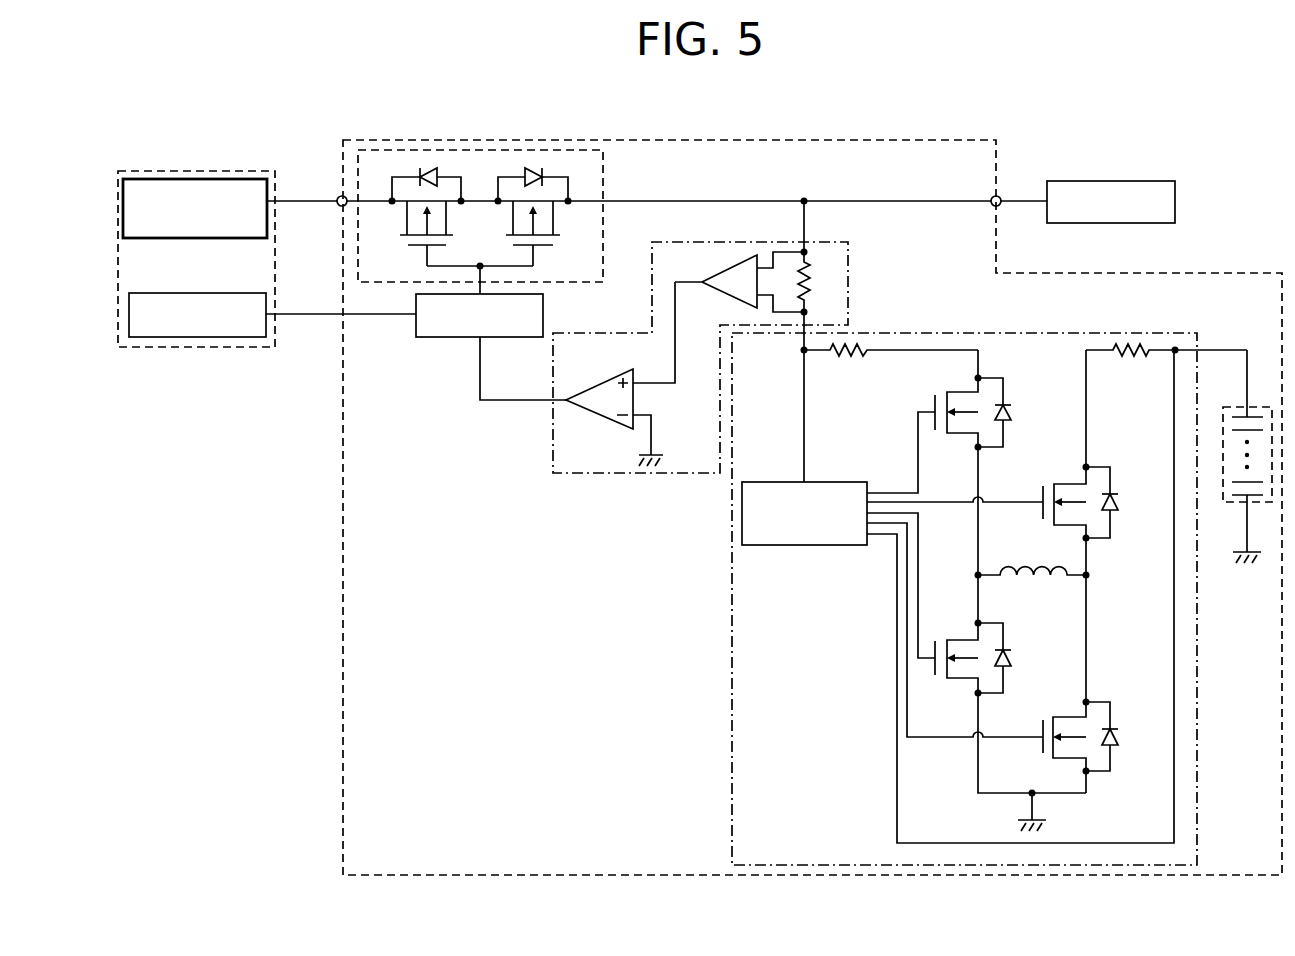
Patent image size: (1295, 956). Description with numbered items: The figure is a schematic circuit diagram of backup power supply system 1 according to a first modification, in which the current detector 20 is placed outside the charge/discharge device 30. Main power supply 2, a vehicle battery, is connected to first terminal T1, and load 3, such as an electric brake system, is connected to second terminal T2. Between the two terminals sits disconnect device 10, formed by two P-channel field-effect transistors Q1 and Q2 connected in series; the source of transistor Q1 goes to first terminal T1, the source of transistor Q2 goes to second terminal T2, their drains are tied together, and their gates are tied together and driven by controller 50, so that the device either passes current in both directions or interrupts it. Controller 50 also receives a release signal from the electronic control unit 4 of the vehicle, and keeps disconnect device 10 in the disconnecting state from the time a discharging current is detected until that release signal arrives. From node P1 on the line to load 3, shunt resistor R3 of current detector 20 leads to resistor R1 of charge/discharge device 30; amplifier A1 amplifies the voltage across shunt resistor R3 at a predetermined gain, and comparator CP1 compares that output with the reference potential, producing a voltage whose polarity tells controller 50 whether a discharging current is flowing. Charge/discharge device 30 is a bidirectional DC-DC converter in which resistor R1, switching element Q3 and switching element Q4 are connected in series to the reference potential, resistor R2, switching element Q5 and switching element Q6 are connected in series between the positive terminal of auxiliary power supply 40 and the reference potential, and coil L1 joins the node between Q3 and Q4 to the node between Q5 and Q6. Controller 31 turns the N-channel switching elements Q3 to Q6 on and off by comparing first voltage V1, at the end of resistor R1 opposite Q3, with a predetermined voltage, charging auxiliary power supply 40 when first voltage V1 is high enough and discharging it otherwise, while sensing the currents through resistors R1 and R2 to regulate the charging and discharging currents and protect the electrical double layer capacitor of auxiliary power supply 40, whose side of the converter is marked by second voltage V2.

The backup power supply system 1 is at (340, 851).
The main power supply 2 is at (153, 240).
The load 3 is at (1138, 185).
The electronic control unit (ECU) 4 is at (241, 292).
The disconnect device 10 is at (605, 173).
The current detector 20 is at (577, 478).
The charge/discharge device 30 is at (730, 775).
The controller 31 is at (832, 548).
The auxiliary power supply 40 is at (1233, 505).
The controller 50 is at (429, 338).
The first terminal T1 is at (338, 199).
The second terminal T2 is at (992, 199).
The node P1 is at (820, 188).
The first voltage V1 is at (819, 227).
The second voltage V2 is at (1203, 340).
The field-effect transistor Q1 is at (417, 217).
The field-effect transistor Q2 is at (545, 217).
The switching element Q3 is at (968, 409).
The switching element Q4 is at (971, 670).
The switching element Q5 is at (1077, 496).
The switching element Q6 is at (1079, 728).
The resistor R1 is at (891, 366).
The resistor R2 is at (1130, 368).
The shunt resistor R3 is at (822, 275).
The coil L1 is at (1032, 559).
The amplifier A1 is at (739, 281).
The comparator CP1 is at (620, 374).